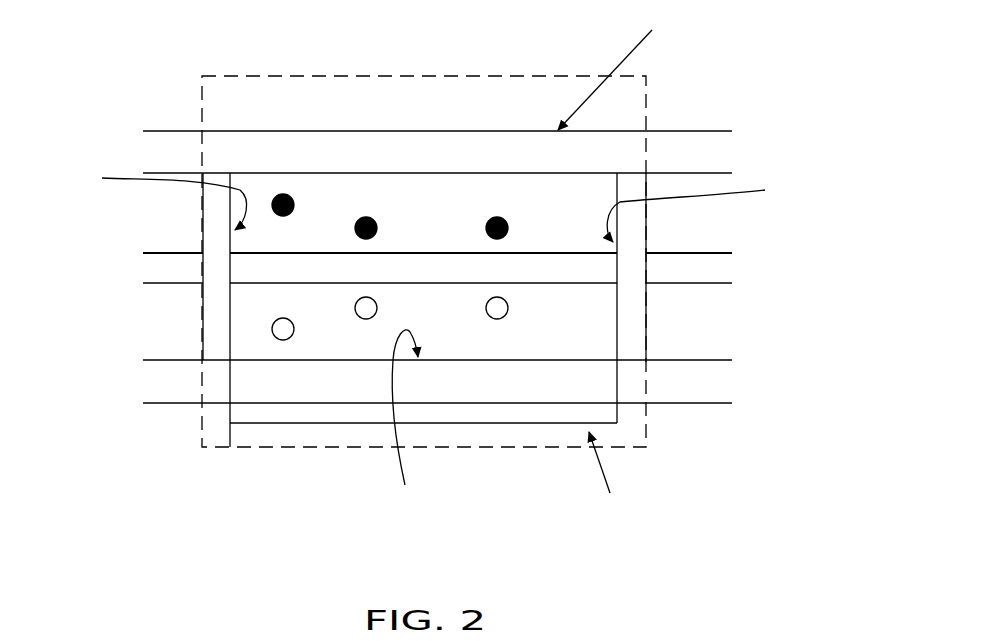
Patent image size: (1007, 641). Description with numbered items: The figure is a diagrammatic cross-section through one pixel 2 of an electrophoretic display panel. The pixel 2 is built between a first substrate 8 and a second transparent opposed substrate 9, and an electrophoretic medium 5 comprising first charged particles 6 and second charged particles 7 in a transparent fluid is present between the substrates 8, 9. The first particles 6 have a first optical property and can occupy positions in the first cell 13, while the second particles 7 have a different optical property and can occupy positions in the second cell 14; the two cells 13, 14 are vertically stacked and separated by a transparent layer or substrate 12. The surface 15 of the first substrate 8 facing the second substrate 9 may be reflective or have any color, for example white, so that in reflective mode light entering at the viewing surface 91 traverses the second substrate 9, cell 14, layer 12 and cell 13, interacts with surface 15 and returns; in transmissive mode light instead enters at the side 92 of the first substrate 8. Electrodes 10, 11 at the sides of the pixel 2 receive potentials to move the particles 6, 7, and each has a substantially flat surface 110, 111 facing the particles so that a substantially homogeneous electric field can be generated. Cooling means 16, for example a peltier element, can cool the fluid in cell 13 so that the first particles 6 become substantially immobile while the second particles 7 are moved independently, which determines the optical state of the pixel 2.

The pixel 2 is at (630, 76).
The electrophoretic medium 5 is at (280, 238).
The first charged particles 6 is at (283, 333).
The second charged particles 7 is at (283, 193).
The first substrate 8 is at (162, 378).
The second transparent opposed substrate 9 is at (160, 153).
The electrode 10 is at (217, 322).
The electrode 11 is at (632, 323).
The transparent layer or substrate 12 is at (152, 265).
The first cell 13 is at (445, 342).
The second cell 14 is at (445, 200).
The surface of the first substrate 15 is at (404, 426).
The cooling means 16 is at (230, 447).
The viewing surface 91 is at (616, 66).
The side of the first substrate 92 is at (610, 481).
The substantially flat surface 110 is at (153, 195).
The substantially flat surface 111 is at (709, 207).